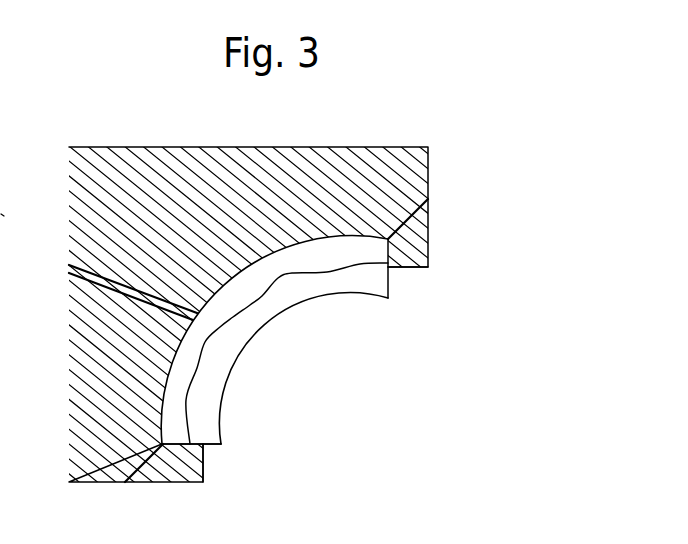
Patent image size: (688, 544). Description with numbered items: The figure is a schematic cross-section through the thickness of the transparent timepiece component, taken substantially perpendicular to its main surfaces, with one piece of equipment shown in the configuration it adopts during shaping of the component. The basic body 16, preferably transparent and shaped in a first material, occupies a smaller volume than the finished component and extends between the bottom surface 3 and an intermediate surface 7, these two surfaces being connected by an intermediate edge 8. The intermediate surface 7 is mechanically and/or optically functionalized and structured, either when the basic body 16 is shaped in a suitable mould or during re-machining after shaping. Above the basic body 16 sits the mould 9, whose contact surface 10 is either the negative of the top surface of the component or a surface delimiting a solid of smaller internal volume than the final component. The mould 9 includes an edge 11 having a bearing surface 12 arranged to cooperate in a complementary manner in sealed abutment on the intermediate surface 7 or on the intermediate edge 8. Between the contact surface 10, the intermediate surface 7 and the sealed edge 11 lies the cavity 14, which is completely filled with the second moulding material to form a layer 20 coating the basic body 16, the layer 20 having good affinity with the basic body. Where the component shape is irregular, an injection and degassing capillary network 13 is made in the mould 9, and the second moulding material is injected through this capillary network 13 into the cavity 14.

The bottom surface 3 is at (370, 317).
The intermediate surface 7 is at (291, 262).
The intermediate edge 8 is at (405, 287).
The mould 9 is at (118, 186).
The contact surface 10 is at (255, 292).
The edge 11 is at (413, 236).
The bearing surface 12 is at (212, 437).
The injection and degassing capillary network 13 is at (427, 200).
The cavity 14 is at (215, 330).
The basic body 16 is at (317, 292).
The layer 20 is at (233, 297).